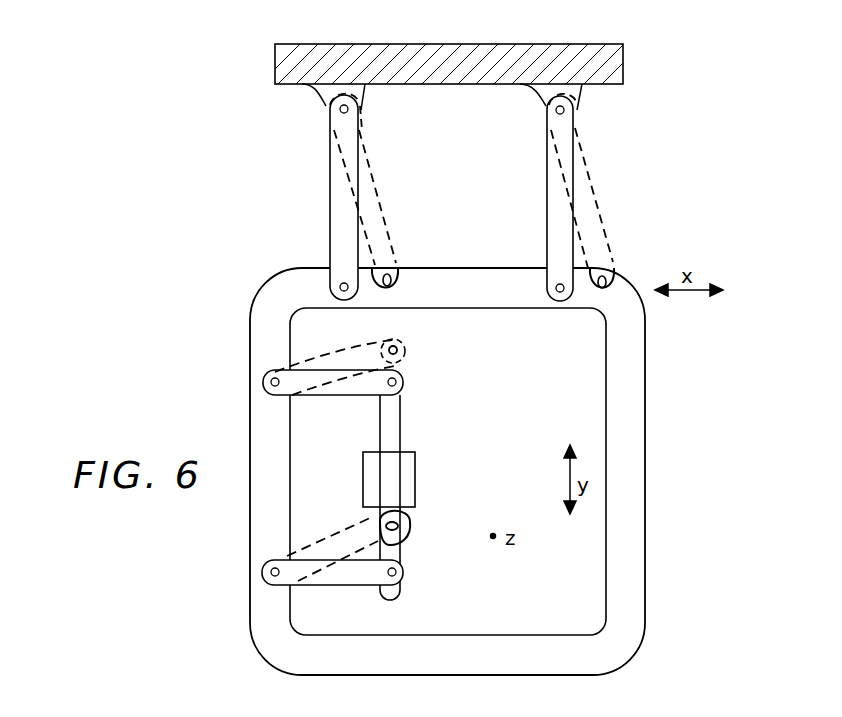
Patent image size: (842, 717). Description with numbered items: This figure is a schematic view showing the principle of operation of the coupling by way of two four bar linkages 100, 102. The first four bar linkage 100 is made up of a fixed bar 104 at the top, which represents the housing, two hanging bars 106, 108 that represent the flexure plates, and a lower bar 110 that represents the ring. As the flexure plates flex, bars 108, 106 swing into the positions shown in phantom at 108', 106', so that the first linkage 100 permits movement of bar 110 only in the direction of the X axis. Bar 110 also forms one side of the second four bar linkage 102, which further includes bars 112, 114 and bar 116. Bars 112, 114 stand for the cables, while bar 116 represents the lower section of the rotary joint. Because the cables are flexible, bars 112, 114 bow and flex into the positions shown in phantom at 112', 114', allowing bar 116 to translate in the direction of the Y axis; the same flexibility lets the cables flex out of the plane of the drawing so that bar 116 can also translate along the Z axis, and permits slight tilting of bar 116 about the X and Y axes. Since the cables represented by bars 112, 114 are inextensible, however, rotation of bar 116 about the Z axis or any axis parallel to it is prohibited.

The four bar linkage 100 is at (226, 124).
The second four bar linkage 102 is at (431, 412).
The bar 104 is at (522, 44).
The bar 106 is at (522, 198).
The flexed position of bar 106 106' is at (618, 191).
The bar 108 is at (301, 197).
The flexed position of bar 108 108' is at (398, 191).
The bar 110 is at (435, 276).
The bar 112 is at (333, 405).
The phantom position of bar 112 112' is at (389, 358).
The bar 114 is at (355, 596).
The phantom position of bar 114 114' is at (348, 533).
The bar 116 is at (410, 475).